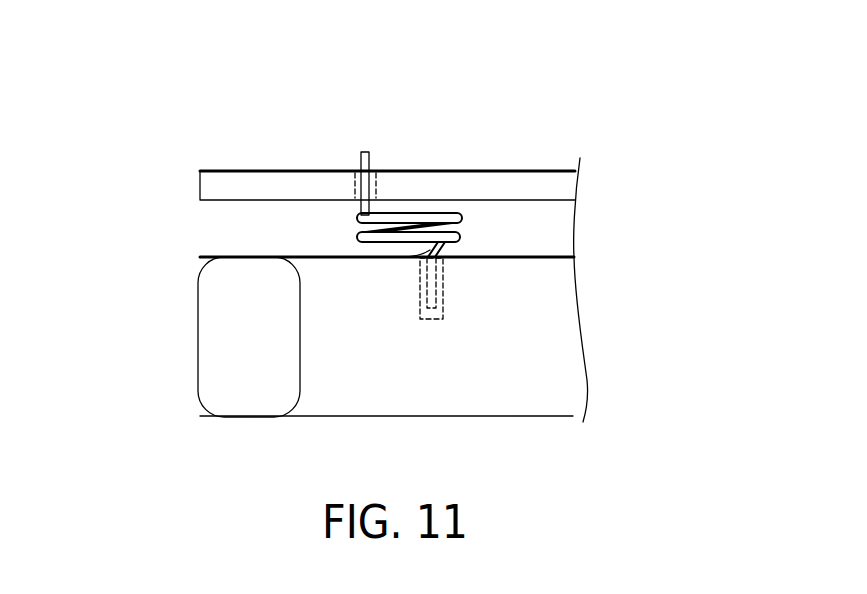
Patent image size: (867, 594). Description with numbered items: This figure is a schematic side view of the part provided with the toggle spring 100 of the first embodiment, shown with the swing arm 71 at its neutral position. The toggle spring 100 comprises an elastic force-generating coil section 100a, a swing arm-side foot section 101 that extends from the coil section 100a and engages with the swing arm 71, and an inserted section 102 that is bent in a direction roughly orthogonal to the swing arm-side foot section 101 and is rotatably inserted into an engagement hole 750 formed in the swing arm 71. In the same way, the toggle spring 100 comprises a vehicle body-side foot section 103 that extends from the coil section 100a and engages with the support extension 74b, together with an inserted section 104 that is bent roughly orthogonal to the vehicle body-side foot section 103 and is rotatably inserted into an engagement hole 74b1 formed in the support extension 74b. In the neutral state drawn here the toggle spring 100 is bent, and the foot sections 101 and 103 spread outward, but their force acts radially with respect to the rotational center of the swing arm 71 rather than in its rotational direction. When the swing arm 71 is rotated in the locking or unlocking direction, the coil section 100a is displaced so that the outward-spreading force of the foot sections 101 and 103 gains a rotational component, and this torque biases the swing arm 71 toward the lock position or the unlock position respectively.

The swing arm 71 is at (185, 387).
The support extension 74b is at (547, 172).
The engagement hole 74b1 is at (378, 176).
The toggle spring 100 is at (338, 226).
The coil section 100a is at (463, 237).
The swing arm-side foot section 101 is at (403, 258).
The inserted section 102 is at (436, 283).
The vehicle body-side foot section 103 is at (360, 213).
The inserted section 104 is at (358, 164).
The engagement hole 750 is at (443, 305).